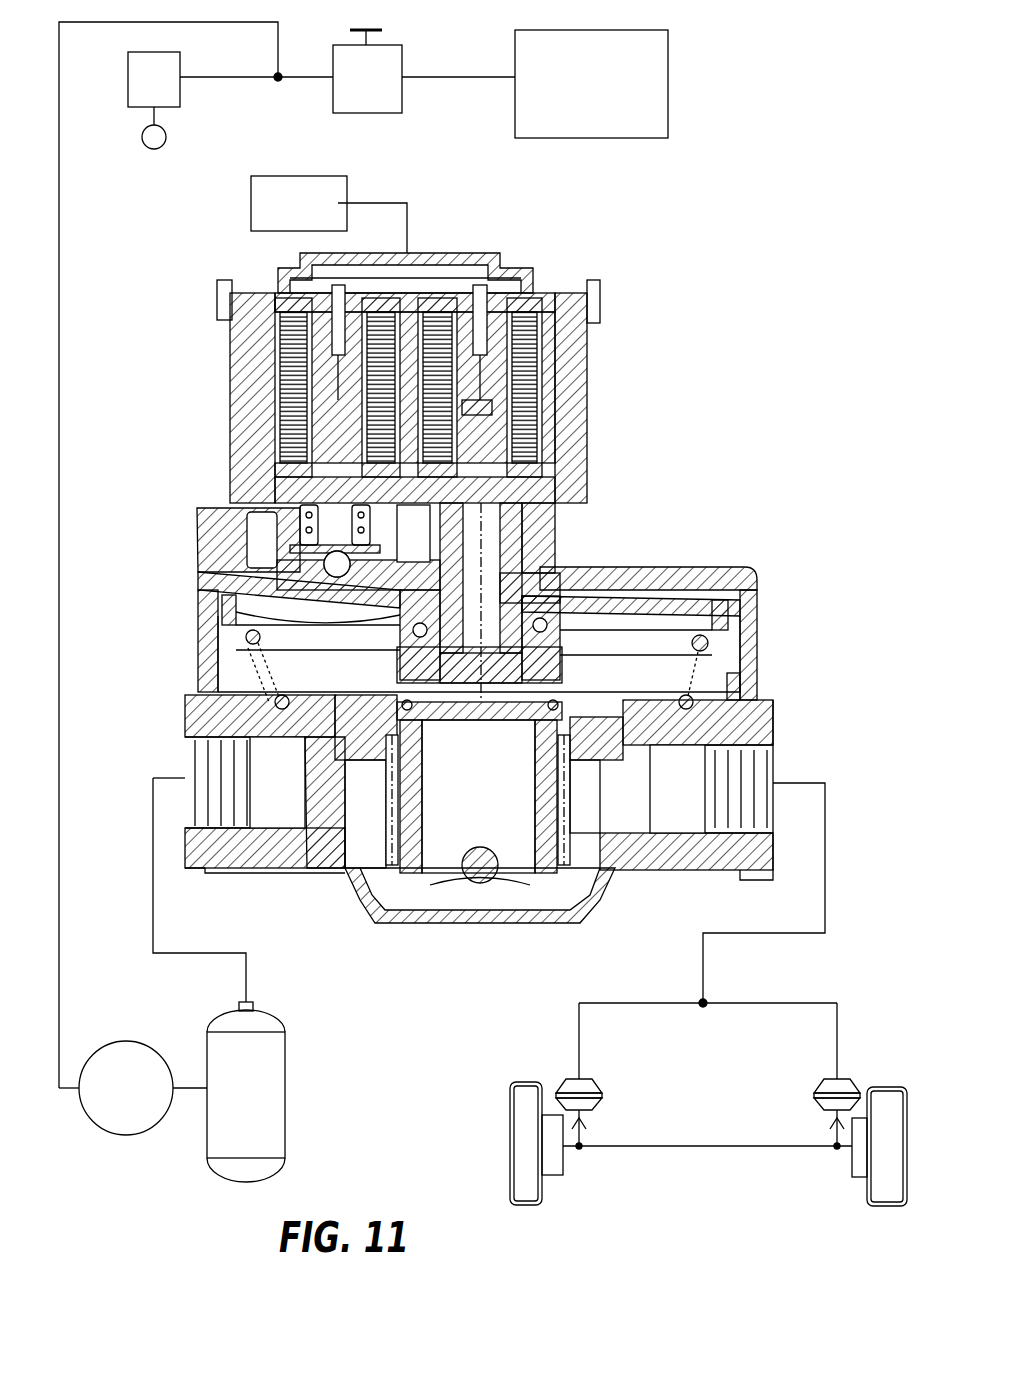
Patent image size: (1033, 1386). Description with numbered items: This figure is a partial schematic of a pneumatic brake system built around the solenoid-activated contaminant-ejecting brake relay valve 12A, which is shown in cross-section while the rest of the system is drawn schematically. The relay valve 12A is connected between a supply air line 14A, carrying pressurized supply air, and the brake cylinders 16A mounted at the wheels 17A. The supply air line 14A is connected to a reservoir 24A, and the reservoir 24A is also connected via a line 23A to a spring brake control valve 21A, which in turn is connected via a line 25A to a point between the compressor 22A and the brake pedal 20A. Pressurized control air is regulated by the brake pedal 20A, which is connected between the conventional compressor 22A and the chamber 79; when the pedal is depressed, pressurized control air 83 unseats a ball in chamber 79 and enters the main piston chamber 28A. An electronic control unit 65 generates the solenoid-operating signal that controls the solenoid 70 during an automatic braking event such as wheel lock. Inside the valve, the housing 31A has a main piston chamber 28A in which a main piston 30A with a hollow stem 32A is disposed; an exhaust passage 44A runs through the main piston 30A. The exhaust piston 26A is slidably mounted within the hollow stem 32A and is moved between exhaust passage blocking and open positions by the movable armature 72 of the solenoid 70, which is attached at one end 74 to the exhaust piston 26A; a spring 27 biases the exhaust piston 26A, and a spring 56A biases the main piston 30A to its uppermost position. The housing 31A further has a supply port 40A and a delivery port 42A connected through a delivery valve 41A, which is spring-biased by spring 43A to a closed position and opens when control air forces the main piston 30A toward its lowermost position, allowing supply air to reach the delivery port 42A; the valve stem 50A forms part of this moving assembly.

The brake relay valve 12A is at (612, 437).
The supply air line 14A is at (247, 960).
The brake cylinders 16A is at (600, 1082).
The wheels 17A is at (880, 1086).
The brake pedal 20A is at (402, 70).
The spring brake control valve 21A is at (100, 1134).
The compressor 22A is at (180, 95).
The line 23A is at (190, 1078).
The reservoir 24A is at (286, 1113).
The line 25A is at (62, 868).
The exhaust piston 26A is at (482, 490).
The spring 27 is at (514, 654).
The main piston chamber 28A is at (262, 603).
The main piston 30A is at (718, 612).
The housing 31A is at (760, 633).
The hollow stem 32A is at (512, 604).
The supply port 40A is at (188, 748).
The delivery valve 41A is at (356, 821).
The delivery port 42A is at (776, 750).
The spring 43A is at (584, 873).
The exhaust passage 44A is at (418, 595).
The valve stem 50A is at (472, 684).
The spring 56A is at (262, 636).
The electronic control unit 65 is at (251, 210).
The solenoid 70 is at (532, 300).
The armature 72 is at (492, 337).
The end 74 is at (490, 406).
The chamber 79 is at (302, 565).
The pressurized control air 83 is at (515, 95).